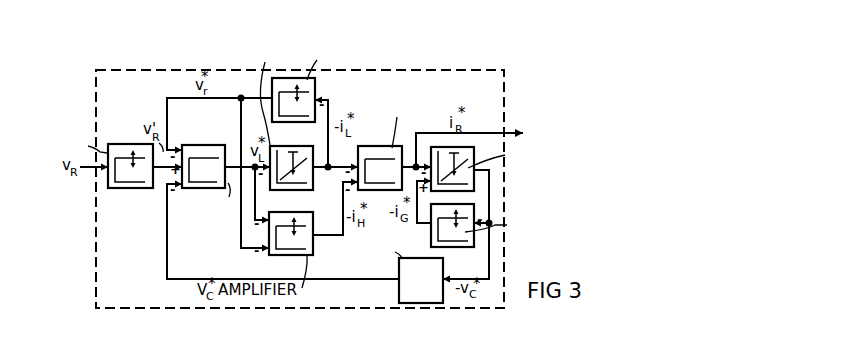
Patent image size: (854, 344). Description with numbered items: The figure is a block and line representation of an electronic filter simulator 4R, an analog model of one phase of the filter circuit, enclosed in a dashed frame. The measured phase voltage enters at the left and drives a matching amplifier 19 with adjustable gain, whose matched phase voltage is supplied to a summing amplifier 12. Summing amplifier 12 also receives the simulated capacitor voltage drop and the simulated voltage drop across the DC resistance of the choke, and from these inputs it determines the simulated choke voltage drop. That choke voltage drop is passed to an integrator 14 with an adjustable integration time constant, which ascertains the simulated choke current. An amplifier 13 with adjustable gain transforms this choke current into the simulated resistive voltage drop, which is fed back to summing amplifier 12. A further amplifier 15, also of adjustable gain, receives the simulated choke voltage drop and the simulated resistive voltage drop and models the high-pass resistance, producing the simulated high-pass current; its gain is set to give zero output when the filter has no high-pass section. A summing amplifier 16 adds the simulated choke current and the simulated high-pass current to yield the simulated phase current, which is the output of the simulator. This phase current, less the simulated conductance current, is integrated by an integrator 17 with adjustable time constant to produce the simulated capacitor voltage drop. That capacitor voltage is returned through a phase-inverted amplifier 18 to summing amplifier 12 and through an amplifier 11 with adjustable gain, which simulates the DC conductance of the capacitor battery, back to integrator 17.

The electronic filter simulator 4R is at (435, 55).
The amplifier 11 is at (457, 247).
The summing amplifier 12 is at (192, 145).
The amplifier 13 is at (315, 82).
The integrator 14 is at (283, 146).
The further amplifier 15 is at (284, 212).
The summing amplifier 16 is at (373, 147).
The integrator 17 is at (476, 156).
The phase-inverted amplifier 18 is at (424, 258).
The matching amplifier 19 is at (137, 144).